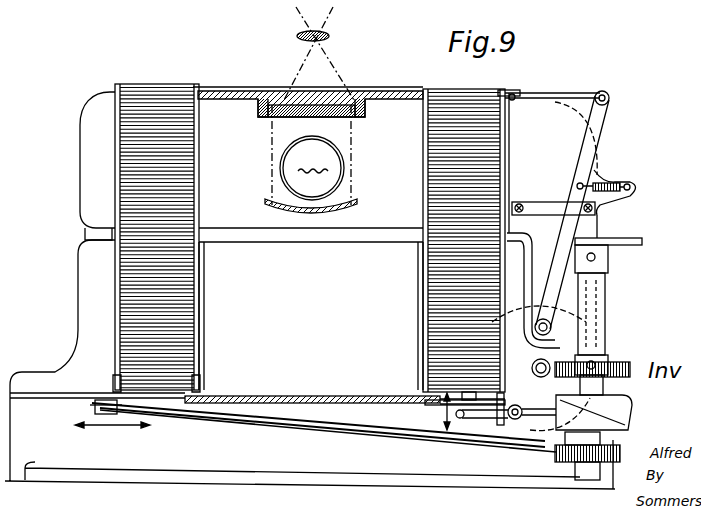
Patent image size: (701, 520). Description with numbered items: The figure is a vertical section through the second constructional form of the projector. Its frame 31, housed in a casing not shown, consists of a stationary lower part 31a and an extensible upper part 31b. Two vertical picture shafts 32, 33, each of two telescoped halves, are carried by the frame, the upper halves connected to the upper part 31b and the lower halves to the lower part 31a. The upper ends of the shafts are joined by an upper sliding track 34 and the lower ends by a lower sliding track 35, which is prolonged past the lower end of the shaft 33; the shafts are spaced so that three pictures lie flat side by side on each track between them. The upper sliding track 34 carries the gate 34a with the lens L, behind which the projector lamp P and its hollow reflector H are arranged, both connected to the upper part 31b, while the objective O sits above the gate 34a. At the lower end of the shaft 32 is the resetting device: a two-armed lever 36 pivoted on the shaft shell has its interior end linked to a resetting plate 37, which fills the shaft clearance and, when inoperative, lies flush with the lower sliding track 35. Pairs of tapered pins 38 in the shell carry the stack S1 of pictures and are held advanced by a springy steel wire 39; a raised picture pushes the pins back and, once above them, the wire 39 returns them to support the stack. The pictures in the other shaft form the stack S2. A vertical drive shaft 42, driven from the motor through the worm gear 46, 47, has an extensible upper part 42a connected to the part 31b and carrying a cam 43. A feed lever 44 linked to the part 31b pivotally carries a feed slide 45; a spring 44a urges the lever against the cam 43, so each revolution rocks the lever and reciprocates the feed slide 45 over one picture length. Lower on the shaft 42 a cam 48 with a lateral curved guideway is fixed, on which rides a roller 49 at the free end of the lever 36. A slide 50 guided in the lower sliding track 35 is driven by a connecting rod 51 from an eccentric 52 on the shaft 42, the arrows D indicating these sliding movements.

The frame 31 is at (84, 463).
The stationary lower part 31a is at (80, 283).
The extensible upper part 31b is at (80, 159).
The picture shaft 32 is at (424, 272).
The picture shaft 33 is at (199, 272).
The upper sliding track 34 is at (395, 100).
The gate 34a is at (322, 103).
The lower sliding track 35 is at (372, 397).
The two-armed lever 36 is at (478, 416).
The resetting plate 37 is at (440, 405).
The pins 38 is at (462, 395).
The springy steel wire 39 is at (516, 405).
The drive shaft 42 is at (600, 343).
The extensible part 42a is at (612, 294).
The cam 43 is at (640, 243).
The feed lever 44 is at (572, 192).
The spring 44a is at (620, 182).
The feed slide 45 is at (515, 93).
The worm gear 46 is at (533, 366).
The worm gear 47 is at (612, 366).
The cam 48 is at (612, 451).
The roller 49 is at (556, 413).
The slide 50 is at (84, 395).
The connecting rod 51 is at (290, 424).
The eccentric 52 is at (548, 452).
The direction of movement D is at (161, 97).
The hollow reflector H is at (280, 203).
The lens L is at (285, 110).
The objective O is at (324, 40).
The projector lamp P is at (283, 160).
The stack of pictures S1 is at (428, 290).
The left solenoid S2 is at (199, 291).